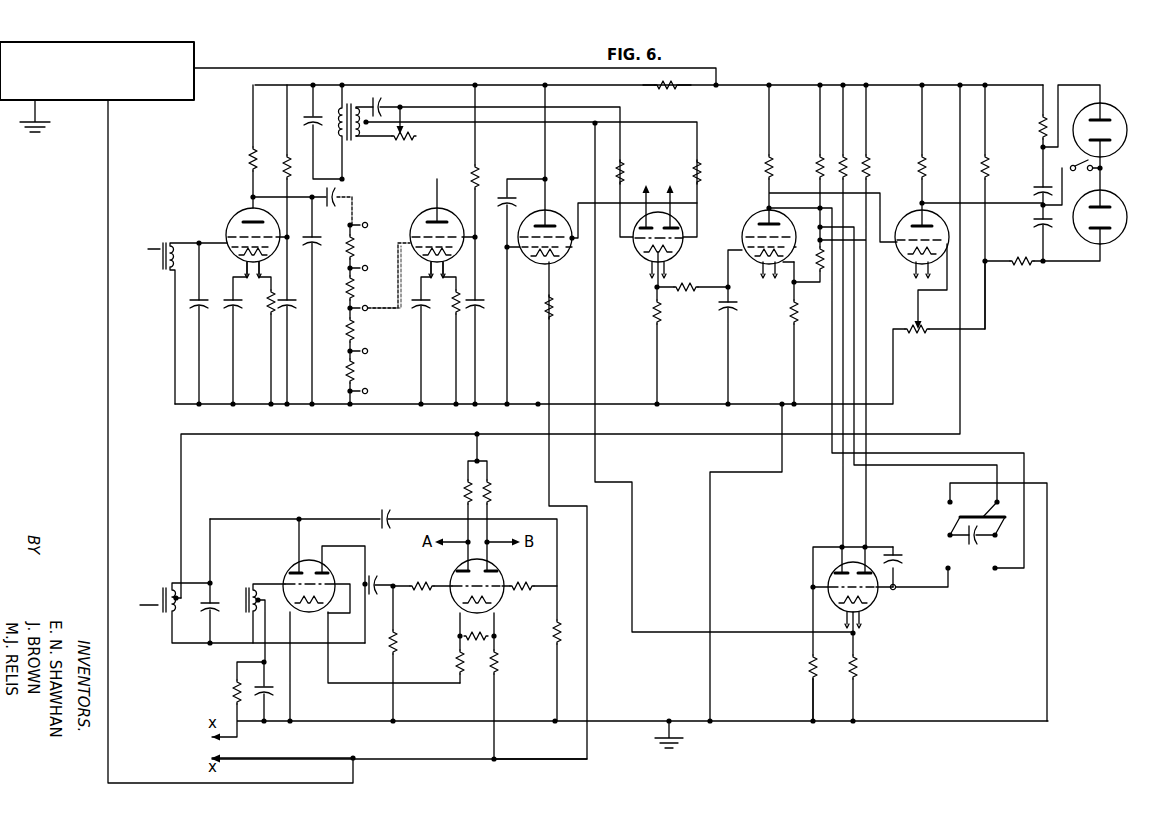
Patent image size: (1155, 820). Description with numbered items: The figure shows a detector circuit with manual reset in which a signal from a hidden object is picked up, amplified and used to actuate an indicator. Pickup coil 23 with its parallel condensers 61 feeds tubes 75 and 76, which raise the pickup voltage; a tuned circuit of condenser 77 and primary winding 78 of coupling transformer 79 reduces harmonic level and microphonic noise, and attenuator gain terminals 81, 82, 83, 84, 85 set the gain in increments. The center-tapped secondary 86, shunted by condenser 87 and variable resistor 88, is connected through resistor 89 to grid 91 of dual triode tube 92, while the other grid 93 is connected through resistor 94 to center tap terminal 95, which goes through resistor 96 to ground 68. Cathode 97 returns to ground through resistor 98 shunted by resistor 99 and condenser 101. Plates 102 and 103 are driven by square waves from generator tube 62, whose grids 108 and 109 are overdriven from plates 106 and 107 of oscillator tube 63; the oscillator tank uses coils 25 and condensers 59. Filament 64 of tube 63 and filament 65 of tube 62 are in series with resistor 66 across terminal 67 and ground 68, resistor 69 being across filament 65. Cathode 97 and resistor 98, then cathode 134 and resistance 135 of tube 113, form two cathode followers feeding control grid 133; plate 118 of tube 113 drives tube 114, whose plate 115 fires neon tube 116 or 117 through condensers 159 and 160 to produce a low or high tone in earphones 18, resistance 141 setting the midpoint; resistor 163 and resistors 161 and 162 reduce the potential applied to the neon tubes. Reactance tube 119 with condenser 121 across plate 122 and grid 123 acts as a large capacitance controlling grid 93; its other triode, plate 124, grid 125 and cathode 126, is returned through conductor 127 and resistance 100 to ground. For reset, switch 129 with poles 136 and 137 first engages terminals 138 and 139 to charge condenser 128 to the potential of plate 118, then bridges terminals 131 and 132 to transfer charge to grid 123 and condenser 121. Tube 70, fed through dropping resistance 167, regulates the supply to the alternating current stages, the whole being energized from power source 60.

The source of power / power supply 60 is at (178, 42).
The dropping resistance 167 is at (676, 92).
The tube 75 is at (234, 216).
The condenser 77 is at (305, 114).
The pickup circuit condensers 61 is at (188, 299).
The pickup coil 23 is at (148, 246).
The primary winding 78 is at (338, 124).
The coupling transformer 79 is at (358, 138).
The condenser 87 is at (386, 100).
The center tap terminal 95 is at (385, 118).
The center tapped secondary 86 is at (405, 130).
The variable resistor 88 is at (412, 140).
The attenuator gain terminal 81 is at (368, 225).
The attenuator gain terminal 82 is at (382, 257).
The attenuator gain terminal 83 is at (382, 297).
The attenuator gain terminal 84 is at (368, 350).
The attenuator gain terminal 85 is at (368, 389).
The tube 76 is at (420, 216).
The tube 70 is at (518, 222).
The resistor 89 is at (622, 170).
The resistor 94 is at (699, 172).
The grid 91 is at (659, 226).
The plate 102 is at (638, 226).
The plate 103 is at (672, 225).
The grid 93 is at (676, 237).
The dual triode tube 92 is at (678, 252).
The cathode 97 is at (640, 258).
The resistor 99 is at (694, 272).
The resistor 98 is at (660, 316).
The condenser 101 is at (732, 312).
The resistance 135 is at (797, 318).
The plate 118 is at (759, 227).
The tube 113 is at (772, 206).
The control grid 133 is at (742, 240).
The cathode 134 is at (746, 262).
The tube 114 is at (917, 230).
The plate 115 is at (926, 224).
The resistance 141 is at (918, 333).
The resistor 162 is at (988, 170).
The resistor 161 is at (1020, 266).
The resistor 163 is at (1040, 130).
The condenser 159 is at (1034, 194).
The condenser 160 is at (1034, 226).
The earphones 18 is at (1076, 164).
The neon tube 116 is at (1115, 110).
The neon tube 117 is at (1115, 198).
The coils 25 is at (140, 605).
The tank circuit condensers 59 is at (212, 590).
The oscillator tube 63 is at (361, 620).
The plate 106 is at (302, 570).
The plate 107 is at (326, 572).
The filament 64 is at (312, 612).
The grid 108 is at (452, 600).
The grid 109 is at (498, 596).
The square-wave generator tube 62 is at (452, 566).
The filament 65 is at (478, 620).
The resistor 69 is at (464, 658).
The resistor 66 is at (498, 662).
The terminal 67 is at (523, 760).
The ground 68 is at (686, 738).
The reactance tube 119 is at (847, 585).
The plate 124 is at (836, 554).
The plate 122 is at (868, 570).
The grid 125 is at (826, 578).
The cathode 126 is at (834, 601).
The condenser 121 is at (898, 556).
The grid 123 is at (905, 584).
The resistance 100 is at (808, 666).
The conductor 127 is at (810, 690).
The resistor 96 is at (858, 666).
The switch terminal 138 is at (946, 500).
The pole 136 is at (986, 514).
The switch terminal 139 is at (999, 500).
The pole 137 is at (1005, 524).
The switch 129 is at (952, 518).
The condenser 128 is at (968, 543).
The terminal 131 is at (950, 571).
The terminal 132 is at (997, 571).